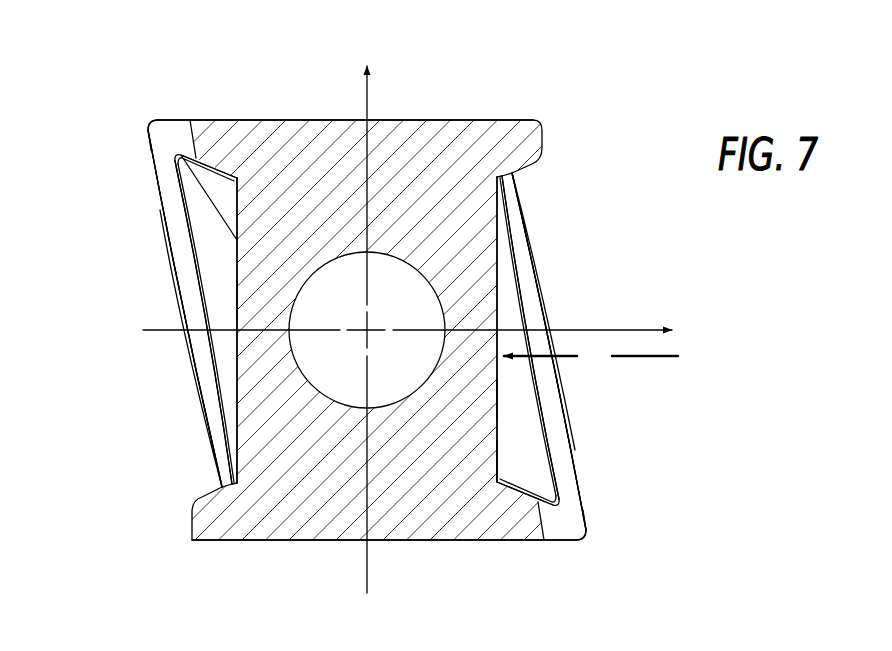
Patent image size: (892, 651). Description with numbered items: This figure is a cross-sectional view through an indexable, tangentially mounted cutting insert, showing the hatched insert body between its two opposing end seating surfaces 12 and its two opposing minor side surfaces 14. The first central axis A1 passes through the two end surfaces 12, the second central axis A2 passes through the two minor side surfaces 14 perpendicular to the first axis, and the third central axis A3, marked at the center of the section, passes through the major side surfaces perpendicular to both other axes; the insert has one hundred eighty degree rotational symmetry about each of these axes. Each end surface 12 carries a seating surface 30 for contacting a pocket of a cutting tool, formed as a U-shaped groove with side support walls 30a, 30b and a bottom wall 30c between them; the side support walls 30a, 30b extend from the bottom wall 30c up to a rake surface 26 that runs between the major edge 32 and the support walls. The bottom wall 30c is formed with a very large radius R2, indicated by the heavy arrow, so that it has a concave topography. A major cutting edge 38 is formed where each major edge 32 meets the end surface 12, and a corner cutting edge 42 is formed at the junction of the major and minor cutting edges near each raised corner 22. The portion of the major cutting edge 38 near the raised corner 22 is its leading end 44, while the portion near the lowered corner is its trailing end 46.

The end seating surface 12 is at (574, 315).
The minor side surface 14 is at (416, 108).
The raised corner 22 is at (147, 118).
The rake surface 26 is at (211, 404).
The seating surface 30 is at (226, 368).
The side support wall 30a is at (526, 440).
The side support wall 30b is at (206, 226).
The bottom wall 30c is at (237, 296).
The major edge 32 is at (155, 313).
The major cutting edge 38 is at (170, 256).
The corner cutting edge 42 is at (147, 133).
The leading end 44 is at (157, 187).
The trailing end 46 is at (208, 440).
The first central axis A1 is at (367, 316).
The second central axis A2 is at (426, 330).
The third central axis A3 is at (365, 326).
The radius R2 is at (591, 358).